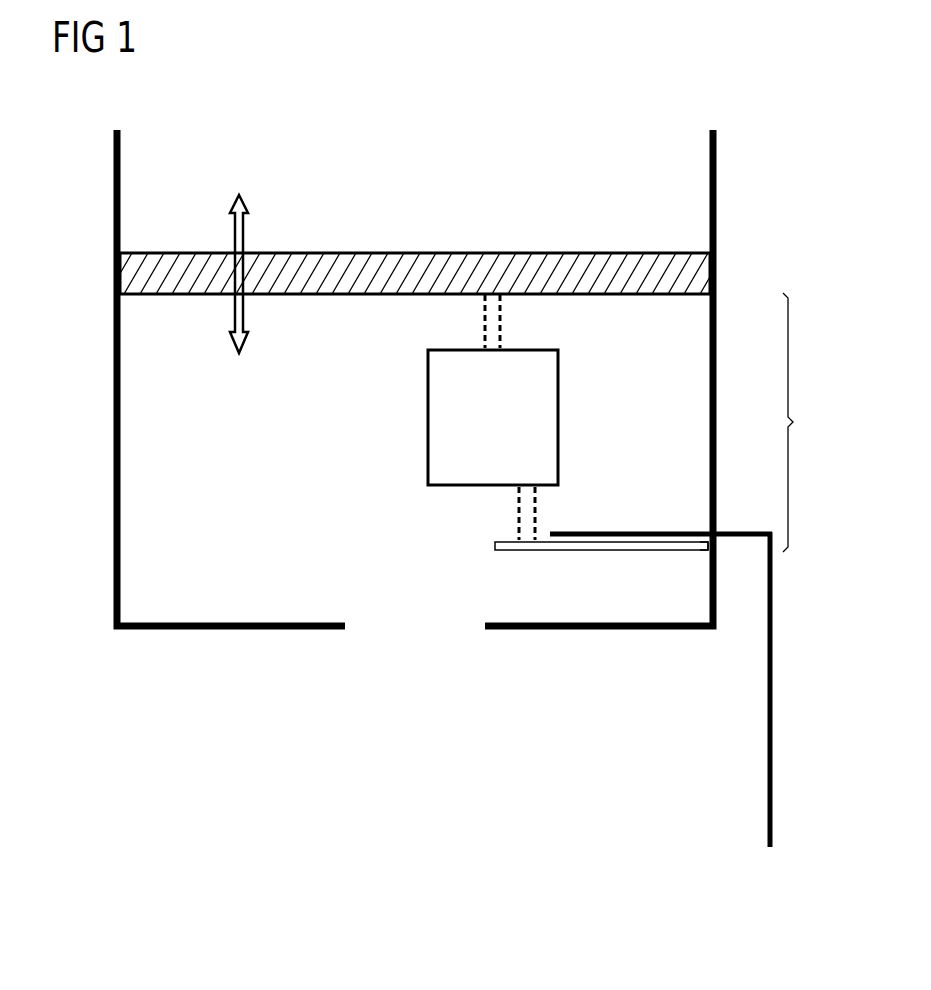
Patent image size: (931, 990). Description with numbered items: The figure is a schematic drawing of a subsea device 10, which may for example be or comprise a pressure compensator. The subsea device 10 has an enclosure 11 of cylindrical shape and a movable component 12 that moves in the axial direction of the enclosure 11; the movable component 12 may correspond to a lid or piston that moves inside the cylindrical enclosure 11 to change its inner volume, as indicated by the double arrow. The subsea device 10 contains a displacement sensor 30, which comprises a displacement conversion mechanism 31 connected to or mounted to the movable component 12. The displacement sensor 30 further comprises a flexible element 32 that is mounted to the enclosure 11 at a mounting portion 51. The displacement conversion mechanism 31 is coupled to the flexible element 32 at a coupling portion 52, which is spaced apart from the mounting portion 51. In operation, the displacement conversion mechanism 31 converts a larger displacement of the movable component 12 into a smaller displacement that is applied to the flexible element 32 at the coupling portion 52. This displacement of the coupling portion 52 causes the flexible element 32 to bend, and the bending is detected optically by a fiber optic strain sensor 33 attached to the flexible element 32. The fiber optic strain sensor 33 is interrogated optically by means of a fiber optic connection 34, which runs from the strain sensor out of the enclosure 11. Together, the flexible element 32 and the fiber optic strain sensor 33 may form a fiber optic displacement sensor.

The subsea device 10 is at (788, 170).
The enclosure 11 is at (114, 443).
The movable component 12 is at (390, 268).
The displacement sensor 30 is at (804, 422).
The displacement conversion mechanism 31 is at (441, 415).
The flexible element 32 is at (594, 552).
The fiber optic strain sensor 33 is at (614, 532).
The fiber optic connection 34 is at (773, 743).
The mounting portion 51 is at (705, 552).
The coupling portion 52 is at (525, 547).